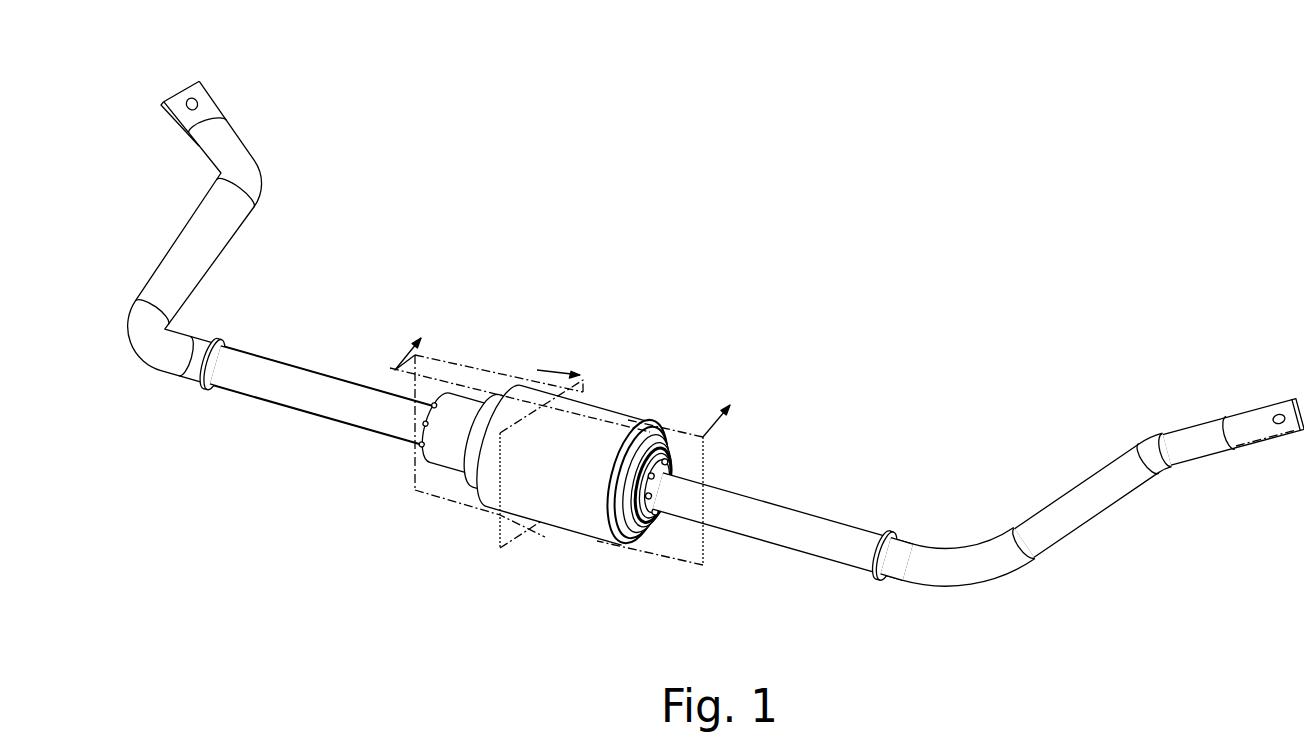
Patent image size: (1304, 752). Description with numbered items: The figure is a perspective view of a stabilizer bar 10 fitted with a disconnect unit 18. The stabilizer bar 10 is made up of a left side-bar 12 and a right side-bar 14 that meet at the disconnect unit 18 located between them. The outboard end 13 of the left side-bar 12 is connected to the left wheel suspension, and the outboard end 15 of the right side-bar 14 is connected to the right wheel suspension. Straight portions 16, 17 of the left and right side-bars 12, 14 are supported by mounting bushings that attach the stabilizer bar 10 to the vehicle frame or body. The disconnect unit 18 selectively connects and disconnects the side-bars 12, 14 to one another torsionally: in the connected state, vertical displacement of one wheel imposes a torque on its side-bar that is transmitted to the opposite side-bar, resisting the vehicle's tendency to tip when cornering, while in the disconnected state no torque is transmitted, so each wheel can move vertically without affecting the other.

The stabilizer bar 10 is at (716, 344).
The left side-bar 12 is at (300, 392).
The outboard end of the left side-bar 13 is at (242, 108).
The right side-bar 14 is at (788, 520).
The outboard end of the right side-bar 15 is at (1278, 410).
The straight portion of the left side-bar 16 is at (250, 360).
The straight portion of the right side-bar 17 is at (820, 547).
The disconnect unit 18 is at (570, 513).